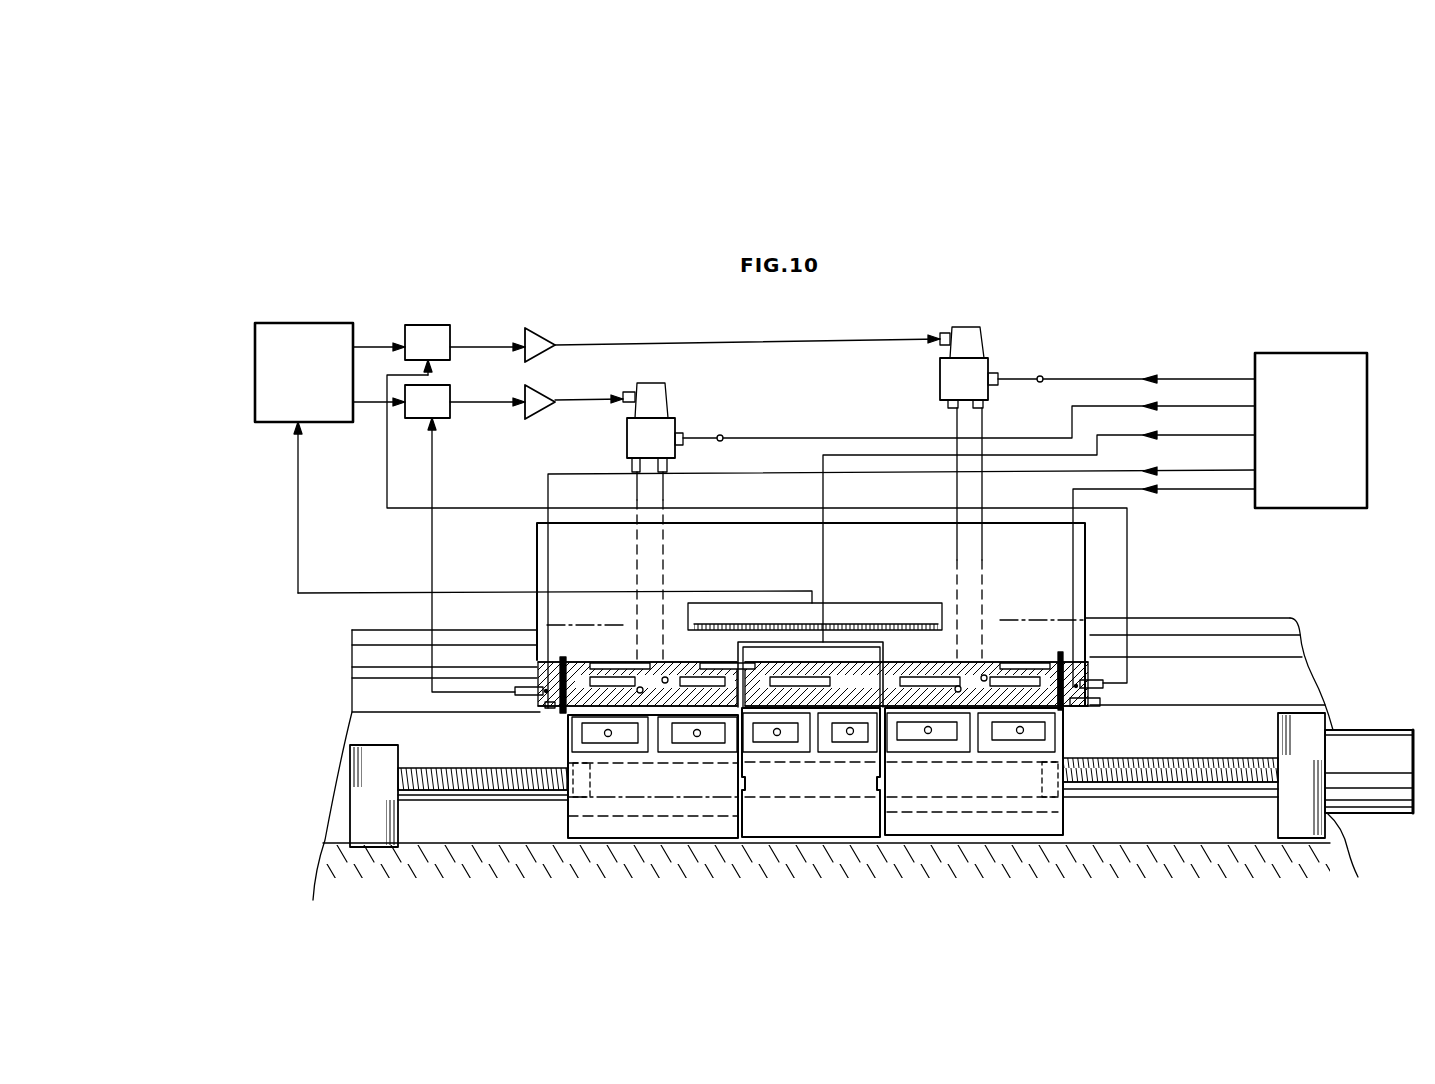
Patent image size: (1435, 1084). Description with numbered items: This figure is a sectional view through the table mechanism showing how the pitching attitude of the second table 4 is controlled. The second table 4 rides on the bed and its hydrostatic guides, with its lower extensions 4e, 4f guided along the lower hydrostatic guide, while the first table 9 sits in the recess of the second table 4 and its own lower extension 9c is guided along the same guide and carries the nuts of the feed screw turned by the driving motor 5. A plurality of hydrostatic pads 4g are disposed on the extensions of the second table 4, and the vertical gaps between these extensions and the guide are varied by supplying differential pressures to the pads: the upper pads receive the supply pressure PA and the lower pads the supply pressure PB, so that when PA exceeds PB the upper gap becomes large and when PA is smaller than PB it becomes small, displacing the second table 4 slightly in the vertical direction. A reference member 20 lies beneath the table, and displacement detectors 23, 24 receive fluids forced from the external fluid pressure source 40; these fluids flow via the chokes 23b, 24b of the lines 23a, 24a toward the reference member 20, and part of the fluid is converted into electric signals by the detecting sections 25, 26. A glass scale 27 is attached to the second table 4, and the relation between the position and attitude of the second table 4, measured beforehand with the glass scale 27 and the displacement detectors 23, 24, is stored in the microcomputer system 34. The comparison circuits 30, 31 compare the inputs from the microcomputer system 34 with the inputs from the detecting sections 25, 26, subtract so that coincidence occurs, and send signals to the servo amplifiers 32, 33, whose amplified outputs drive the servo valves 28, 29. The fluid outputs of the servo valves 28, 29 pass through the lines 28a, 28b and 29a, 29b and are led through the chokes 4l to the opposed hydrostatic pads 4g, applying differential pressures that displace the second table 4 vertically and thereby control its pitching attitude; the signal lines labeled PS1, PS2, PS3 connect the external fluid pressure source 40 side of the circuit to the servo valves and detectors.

The microcomputer system 34 is at (311, 323).
The comparison circuit 30 is at (432, 325).
The comparison circuit 31 is at (445, 419).
The servo amplifier 32 is at (545, 328).
The servo amplifier 33 is at (541, 413).
The external fluid pressure source 40 is at (1313, 353).
The servo valve 29 is at (672, 426).
The servo valve 28 is at (988, 360).
The line 29a is at (665, 497).
The line 29b is at (636, 497).
The line 28a is at (983, 446).
The line 28b is at (956, 498).
The glass scale 27 is at (845, 603).
The second table 4 is at (537, 541).
The hydrostatic pad 4g is at (697, 660).
The choke 4l is at (712, 668).
The first table 9 is at (883, 651).
The lower extension 9c is at (850, 822).
The lower extension 4e is at (1015, 823).
The lower extension 4f is at (682, 823).
The reference member 20 is at (430, 712).
The detecting section 26 is at (520, 700).
The driving motor 5 is at (1383, 743).
The displacement detector 24 is at (548, 712).
The line 24a is at (547, 608).
The choke 24b is at (540, 678).
The displacement detector 23 is at (1095, 697).
The line 23a is at (1077, 603).
The choke 23b is at (1087, 672).
The detecting section 25 is at (1102, 680).
The supply pressure of the upper hydrostatic pads PA is at (665, 648).
The supply pressure of the lower hydrostatic pads PB is at (638, 650).
The position signal 1 PS1 is at (1178, 378).
The position signal 2 PS2 is at (1178, 434).
The position signal 3 PS3 is at (1178, 469).